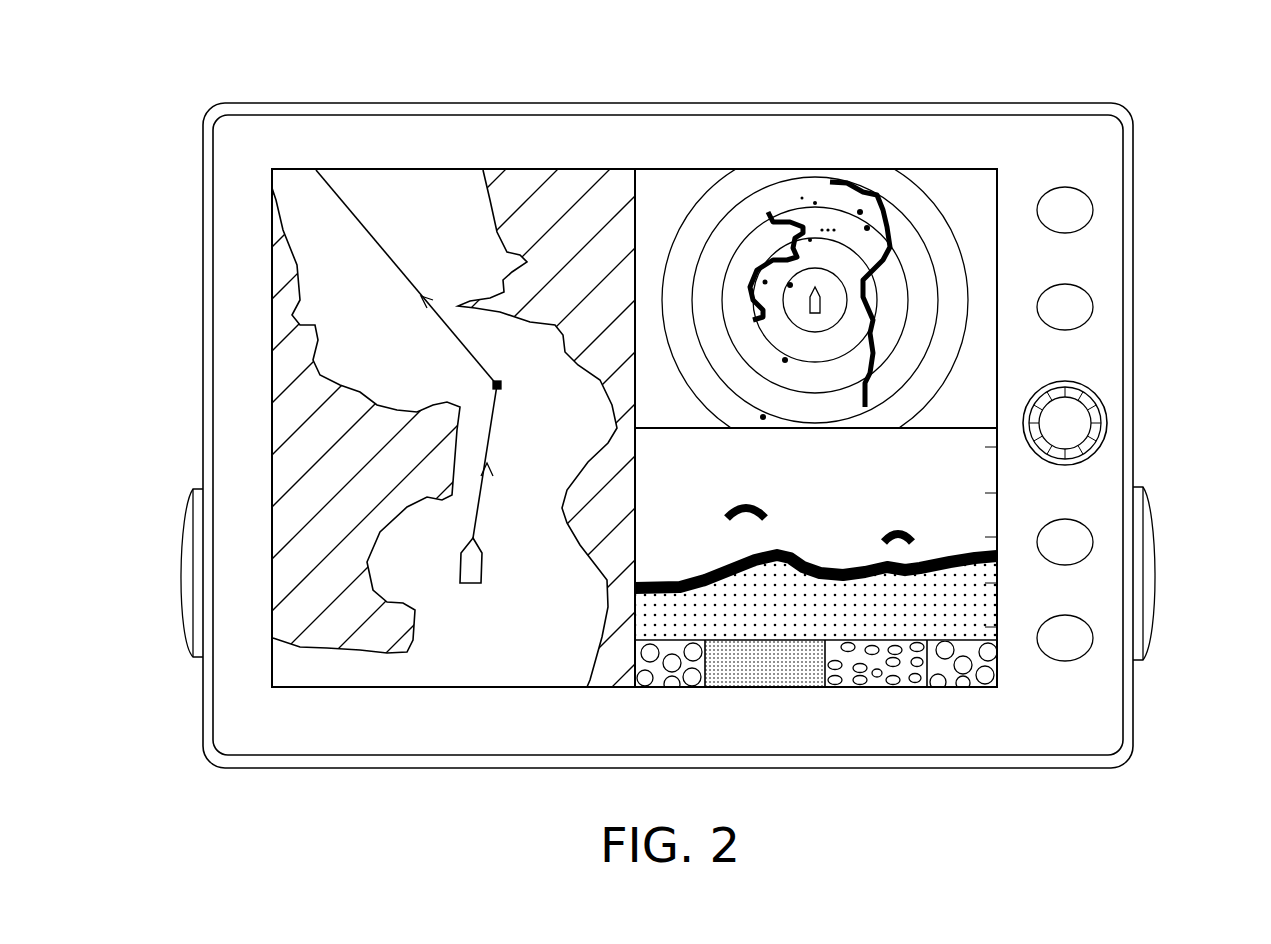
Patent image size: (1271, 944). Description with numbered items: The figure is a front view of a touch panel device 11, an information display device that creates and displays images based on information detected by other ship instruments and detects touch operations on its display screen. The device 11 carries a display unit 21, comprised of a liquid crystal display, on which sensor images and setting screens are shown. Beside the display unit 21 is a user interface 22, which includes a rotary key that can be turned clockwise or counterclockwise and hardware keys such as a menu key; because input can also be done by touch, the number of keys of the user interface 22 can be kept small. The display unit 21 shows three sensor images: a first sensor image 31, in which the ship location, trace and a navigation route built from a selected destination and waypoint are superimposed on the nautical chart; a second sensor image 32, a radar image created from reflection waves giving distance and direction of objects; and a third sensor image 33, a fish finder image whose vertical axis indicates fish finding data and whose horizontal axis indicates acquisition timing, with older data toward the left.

The touch panel device 11 is at (1214, 133).
The display unit 21 is at (1012, 172).
The user interface 22 is at (1110, 391).
The first sensor image 31 is at (272, 203).
The second sensor image 32 is at (992, 272).
The third sensor image 33 is at (1000, 615).